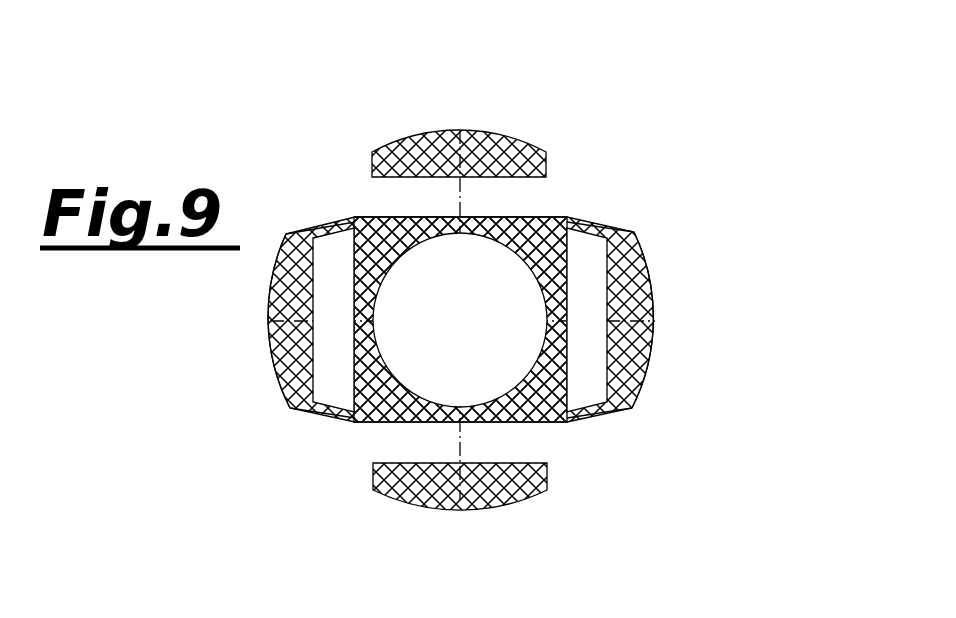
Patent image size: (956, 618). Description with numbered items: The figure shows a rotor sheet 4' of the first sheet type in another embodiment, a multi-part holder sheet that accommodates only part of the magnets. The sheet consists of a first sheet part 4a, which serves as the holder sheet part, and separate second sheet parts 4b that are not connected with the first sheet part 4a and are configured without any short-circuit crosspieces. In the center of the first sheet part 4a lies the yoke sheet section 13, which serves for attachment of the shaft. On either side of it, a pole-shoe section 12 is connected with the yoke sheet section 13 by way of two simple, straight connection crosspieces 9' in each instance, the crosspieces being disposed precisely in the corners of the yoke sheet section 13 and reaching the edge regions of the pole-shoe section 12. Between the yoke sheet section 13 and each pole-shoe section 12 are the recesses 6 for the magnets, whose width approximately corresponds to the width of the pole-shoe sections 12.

The rotor sheet of the first sheet type 4' is at (453, 299).
The first sheet part 4a is at (271, 379).
The second sheet parts 4b is at (493, 133).
The recesses 6 is at (323, 283).
The connection crosspieces 9' is at (467, 341).
The pole-shoe section 12 is at (270, 337).
The yoke sheet section 13 is at (417, 412).